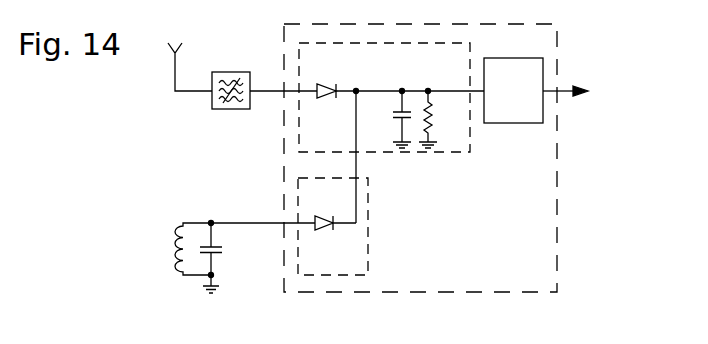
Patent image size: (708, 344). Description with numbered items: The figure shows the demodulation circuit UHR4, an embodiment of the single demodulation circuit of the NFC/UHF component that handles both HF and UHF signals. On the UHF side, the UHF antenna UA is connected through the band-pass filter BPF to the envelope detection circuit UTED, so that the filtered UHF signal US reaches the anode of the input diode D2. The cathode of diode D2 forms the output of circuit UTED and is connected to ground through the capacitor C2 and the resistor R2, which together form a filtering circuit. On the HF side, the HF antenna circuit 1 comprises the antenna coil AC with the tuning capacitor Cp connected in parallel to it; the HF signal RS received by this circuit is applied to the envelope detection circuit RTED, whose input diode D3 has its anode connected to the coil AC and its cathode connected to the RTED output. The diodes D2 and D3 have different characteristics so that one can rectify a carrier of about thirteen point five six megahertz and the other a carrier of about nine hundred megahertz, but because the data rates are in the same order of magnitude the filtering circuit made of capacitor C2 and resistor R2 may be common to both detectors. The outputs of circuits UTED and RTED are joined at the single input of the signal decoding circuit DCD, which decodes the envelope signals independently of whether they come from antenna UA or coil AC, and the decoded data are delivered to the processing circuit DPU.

The HF antenna circuit 1 is at (186, 216).
The UHF antenna UA is at (186, 54).
The band-pass filter BPF is at (250, 70).
The UHF signal US is at (283, 83).
The demodulation circuit UHR4 is at (532, 200).
The envelope detection circuit UTED is at (414, 67).
The input diode D2 is at (397, 77).
The capacitor C2 is at (386, 119).
The resistor R2 is at (442, 119).
The signal decoding circuit DCD is at (539, 100).
The processing circuit DPU is at (592, 90).
The envelope detection circuit RTED is at (363, 267).
The input diode D3 is at (332, 160).
The HF signal RS is at (263, 216).
The antenna coil AC is at (176, 249).
The tuning capacitor Cp is at (228, 257).